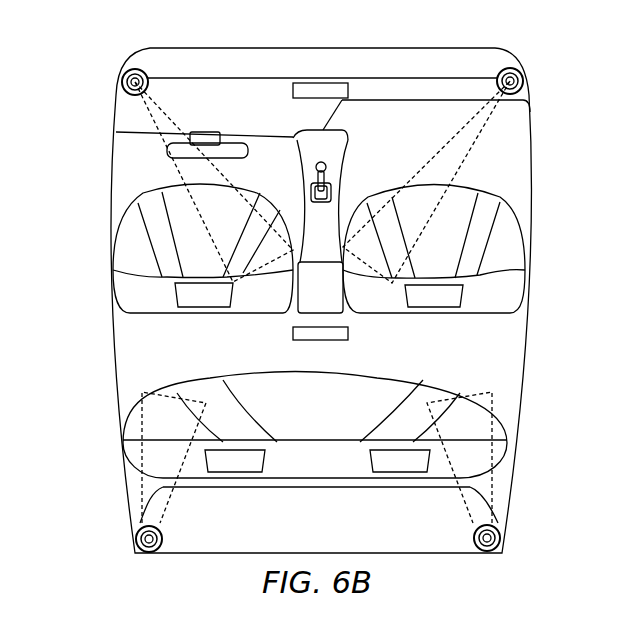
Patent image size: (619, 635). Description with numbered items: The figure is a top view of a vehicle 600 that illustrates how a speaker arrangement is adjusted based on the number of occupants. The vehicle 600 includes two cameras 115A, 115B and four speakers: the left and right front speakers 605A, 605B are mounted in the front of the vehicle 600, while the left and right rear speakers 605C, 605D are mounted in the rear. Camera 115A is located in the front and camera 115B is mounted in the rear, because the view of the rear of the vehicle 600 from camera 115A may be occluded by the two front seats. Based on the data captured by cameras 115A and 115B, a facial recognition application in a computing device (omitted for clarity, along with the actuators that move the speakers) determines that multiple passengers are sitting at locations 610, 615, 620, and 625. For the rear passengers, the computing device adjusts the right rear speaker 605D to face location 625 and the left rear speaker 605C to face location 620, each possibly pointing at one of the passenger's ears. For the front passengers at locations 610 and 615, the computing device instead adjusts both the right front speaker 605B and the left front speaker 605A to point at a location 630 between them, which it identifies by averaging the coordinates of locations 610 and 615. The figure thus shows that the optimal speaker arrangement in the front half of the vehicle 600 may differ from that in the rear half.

The vehicle 600 is at (413, 48).
The left front speaker 605A is at (142, 70).
The right front speaker 605B is at (507, 68).
The left rear speaker 605C is at (133, 522).
The right rear speaker 605D is at (503, 522).
The front camera 115A is at (293, 90).
The rear camera 115B is at (348, 333).
The front passenger location 610 is at (139, 252).
The front passenger location 615 is at (442, 242).
The rear passenger location 620 is at (170, 421).
The rear passenger location 625 is at (467, 418).
The location between front passengers 630 is at (314, 234).